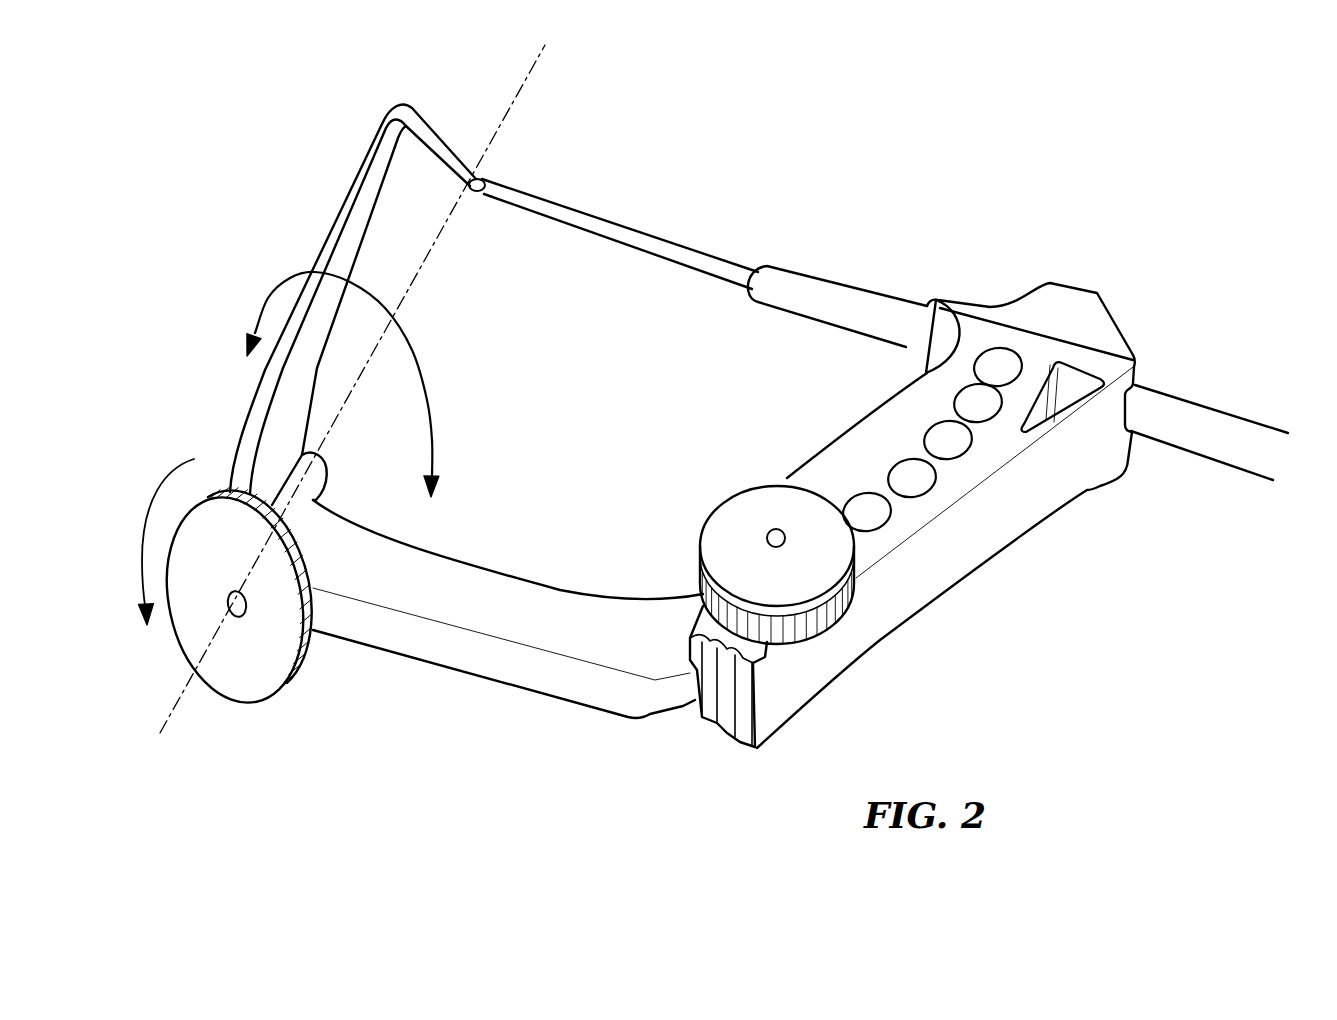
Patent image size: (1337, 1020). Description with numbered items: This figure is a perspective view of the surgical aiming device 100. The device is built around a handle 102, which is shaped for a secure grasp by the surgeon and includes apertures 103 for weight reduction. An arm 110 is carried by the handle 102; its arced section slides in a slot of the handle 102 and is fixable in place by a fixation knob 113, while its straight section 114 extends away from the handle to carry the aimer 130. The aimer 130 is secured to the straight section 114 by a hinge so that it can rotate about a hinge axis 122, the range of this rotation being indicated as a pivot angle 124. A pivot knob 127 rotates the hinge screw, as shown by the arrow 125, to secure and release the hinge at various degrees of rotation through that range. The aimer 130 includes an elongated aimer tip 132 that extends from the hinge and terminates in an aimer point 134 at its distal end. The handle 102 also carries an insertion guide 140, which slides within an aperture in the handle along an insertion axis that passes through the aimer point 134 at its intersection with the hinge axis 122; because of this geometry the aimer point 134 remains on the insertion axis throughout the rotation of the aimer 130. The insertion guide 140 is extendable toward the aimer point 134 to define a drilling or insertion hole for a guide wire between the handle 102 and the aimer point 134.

The surgical aiming device 100 is at (895, 172).
The handle 102 is at (1068, 283).
The apertures 103 is at (860, 512).
The arm 110 is at (650, 708).
The fixation knob 113 is at (722, 516).
The straight section 114 is at (533, 710).
The hinge axis 122 is at (520, 100).
The pivot angle (range of rotation arrow) 124 is at (425, 364).
The pivot knob rotation arrow 125 is at (163, 488).
The pivot knob 127 is at (252, 688).
The aimer 130 is at (330, 197).
The aimer tip 132 is at (228, 388).
The aimer point 134 is at (474, 178).
The insertion guide 140 is at (697, 252).